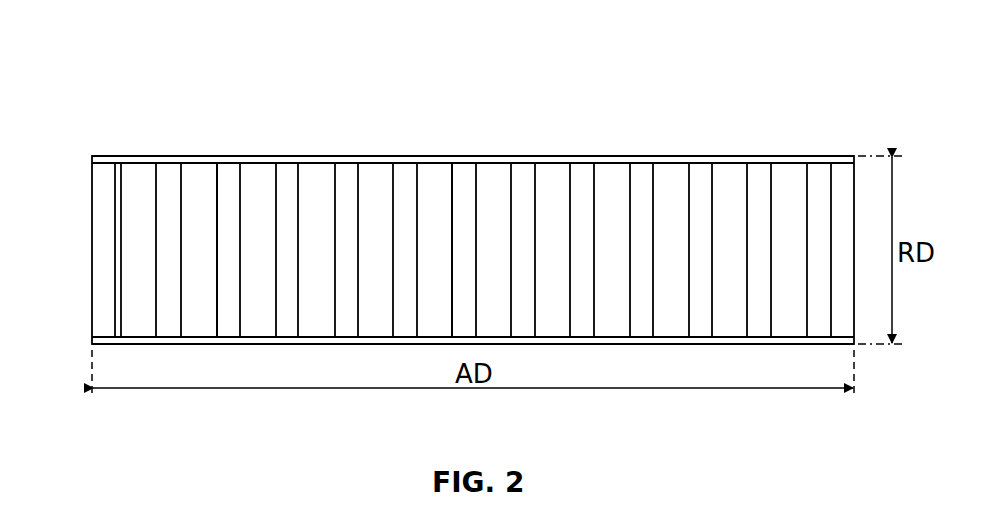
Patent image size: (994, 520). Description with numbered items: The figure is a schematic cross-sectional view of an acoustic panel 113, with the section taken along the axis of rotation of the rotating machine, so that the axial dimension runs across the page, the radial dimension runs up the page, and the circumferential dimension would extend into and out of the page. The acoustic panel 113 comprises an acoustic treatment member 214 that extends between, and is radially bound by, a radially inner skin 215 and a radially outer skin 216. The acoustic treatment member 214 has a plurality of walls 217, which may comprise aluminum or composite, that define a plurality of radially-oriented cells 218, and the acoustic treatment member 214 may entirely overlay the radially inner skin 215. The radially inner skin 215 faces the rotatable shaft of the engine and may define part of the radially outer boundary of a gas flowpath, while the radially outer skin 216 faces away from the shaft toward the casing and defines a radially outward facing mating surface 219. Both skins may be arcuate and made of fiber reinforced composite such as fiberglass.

The acoustic panel 113 is at (145, 56).
The acoustic treatment member 214 is at (228, 235).
The radially inner skin 215 is at (708, 344).
The radially outer skin 216 is at (672, 163).
The walls 217 is at (154, 303).
The radially-oriented cells 218 is at (433, 196).
The mating surface 219 is at (225, 156).